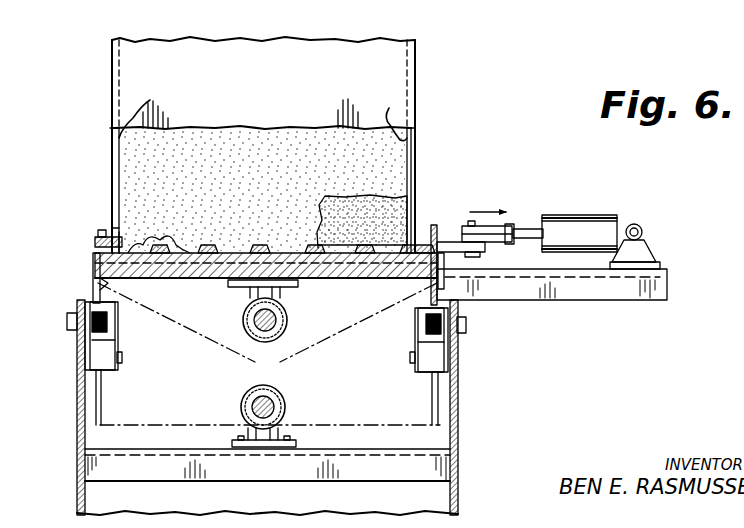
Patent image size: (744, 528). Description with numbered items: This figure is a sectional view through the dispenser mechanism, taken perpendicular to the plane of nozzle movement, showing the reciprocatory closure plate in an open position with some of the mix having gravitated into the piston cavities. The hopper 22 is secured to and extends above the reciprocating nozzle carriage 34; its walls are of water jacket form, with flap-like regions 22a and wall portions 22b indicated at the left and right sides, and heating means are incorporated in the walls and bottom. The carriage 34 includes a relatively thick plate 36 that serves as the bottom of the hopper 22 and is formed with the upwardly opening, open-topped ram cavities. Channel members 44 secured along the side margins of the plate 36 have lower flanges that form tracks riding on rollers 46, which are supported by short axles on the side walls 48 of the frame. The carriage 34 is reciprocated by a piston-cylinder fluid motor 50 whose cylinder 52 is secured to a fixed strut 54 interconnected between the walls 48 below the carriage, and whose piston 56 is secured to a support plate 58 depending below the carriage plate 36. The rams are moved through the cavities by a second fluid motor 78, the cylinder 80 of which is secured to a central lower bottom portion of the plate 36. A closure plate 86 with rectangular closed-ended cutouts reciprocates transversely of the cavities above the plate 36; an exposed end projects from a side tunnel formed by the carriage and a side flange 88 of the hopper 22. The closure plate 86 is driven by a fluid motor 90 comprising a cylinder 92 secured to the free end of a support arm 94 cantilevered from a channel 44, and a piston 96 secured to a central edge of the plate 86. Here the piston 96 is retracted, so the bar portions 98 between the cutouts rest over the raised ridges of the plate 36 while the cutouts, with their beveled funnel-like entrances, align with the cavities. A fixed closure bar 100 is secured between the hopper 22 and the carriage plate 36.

The hopper 22 is at (268, 109).
The hopper flap 22a is at (151, 100).
The hopper wall 22b is at (111, 142).
The nozzle carriage 34 is at (108, 222).
The plate 36 is at (92, 262).
The channel members 44 is at (92, 301).
The rollers 46 is at (108, 332).
The side walls 48 is at (77, 411).
The fluid motor 50 is at (238, 407).
The cylinder 52 is at (286, 409).
The fixed strut 54 is at (258, 481).
The piston 56 is at (270, 402).
The support plate 58 is at (355, 412).
The fluid motor 78 is at (238, 340).
The cylinder 80 is at (288, 320).
The closure plate 86 is at (145, 229).
The side flange 88 is at (435, 236).
The fluid motor 90 is at (541, 212).
The cylinder 92 is at (588, 220).
The support arm 94 is at (583, 288).
The piston 96 is at (525, 228).
The bar portions 98 is at (190, 246).
The fixed closure bar 100 is at (94, 241).